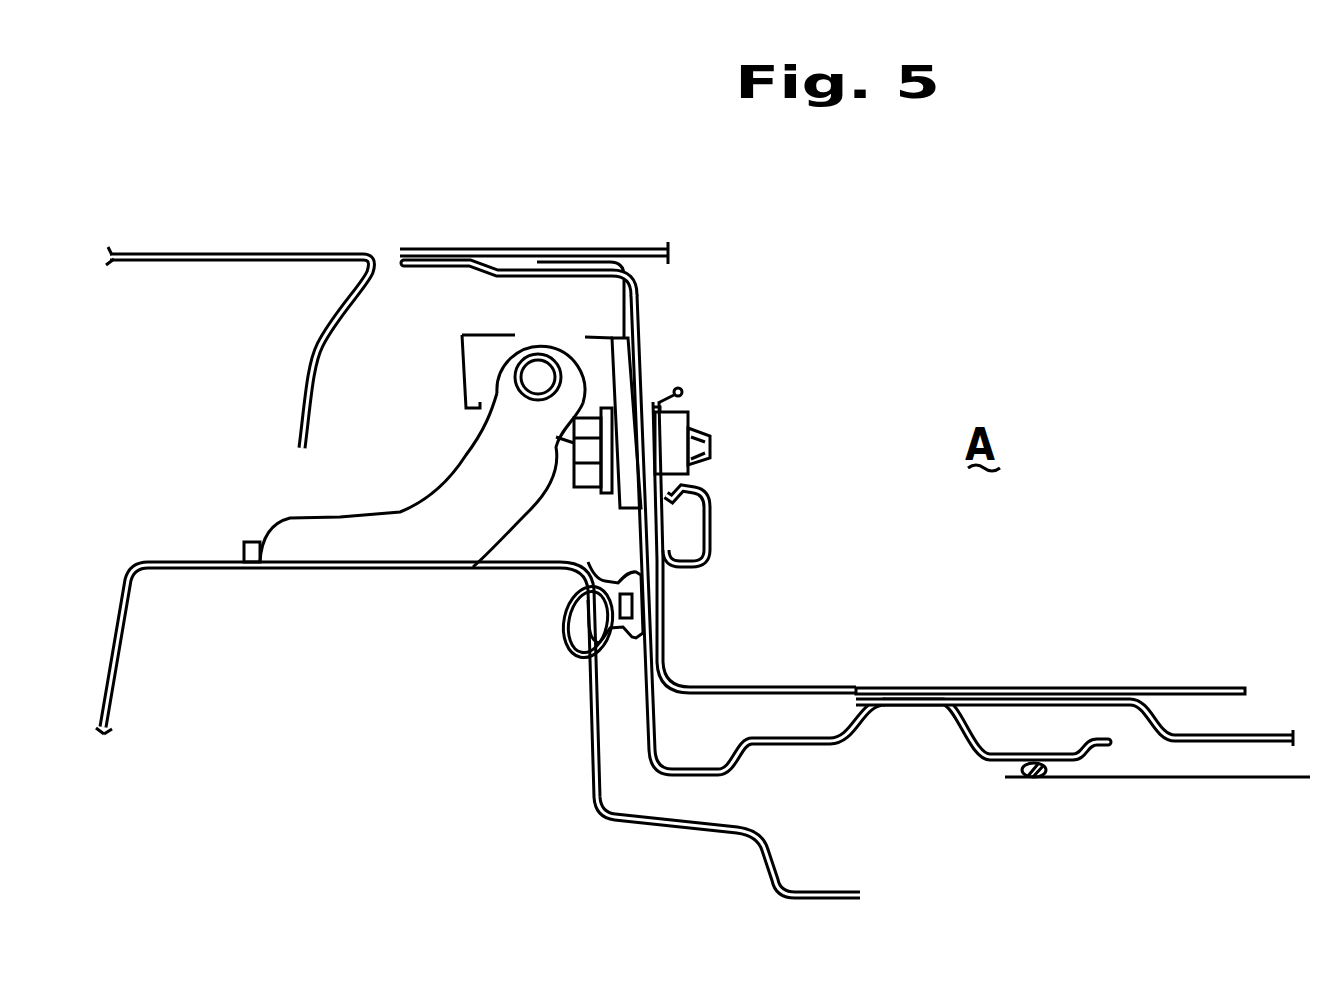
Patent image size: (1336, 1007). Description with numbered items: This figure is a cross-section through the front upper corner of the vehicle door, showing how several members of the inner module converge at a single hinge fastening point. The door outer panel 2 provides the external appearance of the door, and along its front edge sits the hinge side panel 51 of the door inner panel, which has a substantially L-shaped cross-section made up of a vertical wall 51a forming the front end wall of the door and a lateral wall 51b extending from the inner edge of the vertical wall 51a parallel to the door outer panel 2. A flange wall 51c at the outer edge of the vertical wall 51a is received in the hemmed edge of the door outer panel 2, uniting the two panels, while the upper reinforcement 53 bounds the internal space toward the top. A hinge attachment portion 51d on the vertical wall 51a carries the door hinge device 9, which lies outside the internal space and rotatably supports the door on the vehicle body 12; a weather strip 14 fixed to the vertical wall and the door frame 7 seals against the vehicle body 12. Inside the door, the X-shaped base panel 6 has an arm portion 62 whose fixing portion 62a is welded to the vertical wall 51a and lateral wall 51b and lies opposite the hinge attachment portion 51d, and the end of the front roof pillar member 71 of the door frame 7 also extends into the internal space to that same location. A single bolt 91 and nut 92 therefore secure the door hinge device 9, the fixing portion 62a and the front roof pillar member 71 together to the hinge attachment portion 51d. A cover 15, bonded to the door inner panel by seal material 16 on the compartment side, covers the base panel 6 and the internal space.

The door outer panel 2 is at (641, 248).
The base panel 6 is at (940, 650).
The door frame 7 is at (720, 527).
The door hinge device 9 is at (353, 530).
The vehicle body 12 is at (590, 742).
The weather strip 14 is at (565, 645).
The cover 15 is at (1112, 779).
The seal material 16 is at (1035, 780).
The hinge side panel 51 is at (743, 521).
The vertical wall 51a is at (622, 530).
The lateral wall 51b is at (766, 743).
The flange wall 51c is at (508, 266).
The hinge attachment portion 51d is at (640, 353).
The upper reinforcement 53 is at (1193, 688).
The arm portion 62 is at (940, 650).
The fixing portion 62a is at (660, 603).
The front roof pillar member 71 is at (710, 497).
The bolt 91 is at (588, 455).
The nut 92 is at (670, 428).